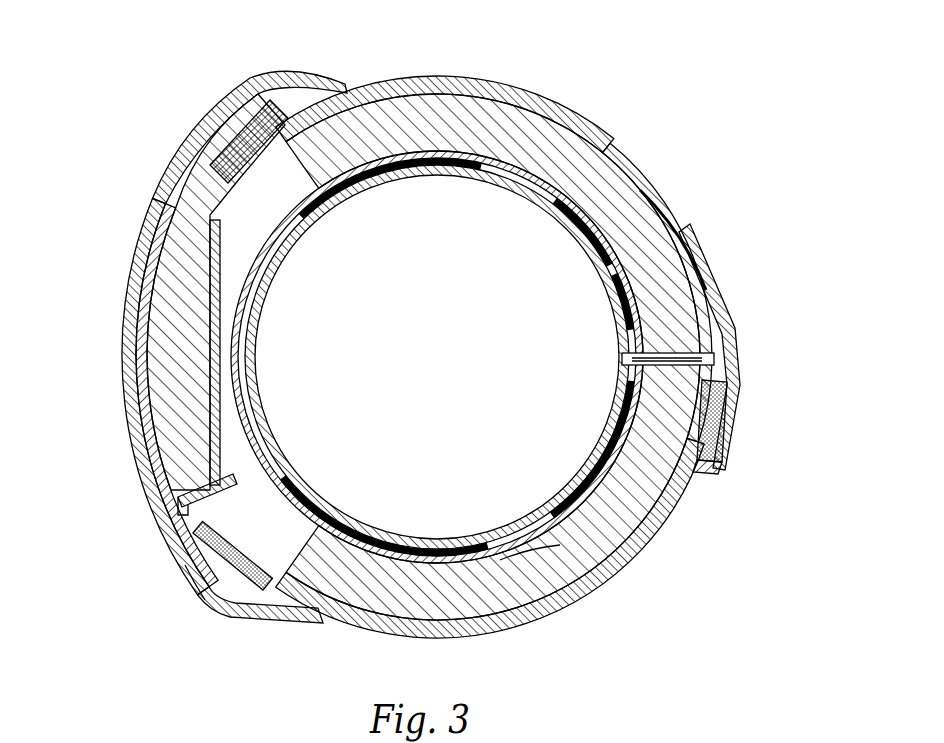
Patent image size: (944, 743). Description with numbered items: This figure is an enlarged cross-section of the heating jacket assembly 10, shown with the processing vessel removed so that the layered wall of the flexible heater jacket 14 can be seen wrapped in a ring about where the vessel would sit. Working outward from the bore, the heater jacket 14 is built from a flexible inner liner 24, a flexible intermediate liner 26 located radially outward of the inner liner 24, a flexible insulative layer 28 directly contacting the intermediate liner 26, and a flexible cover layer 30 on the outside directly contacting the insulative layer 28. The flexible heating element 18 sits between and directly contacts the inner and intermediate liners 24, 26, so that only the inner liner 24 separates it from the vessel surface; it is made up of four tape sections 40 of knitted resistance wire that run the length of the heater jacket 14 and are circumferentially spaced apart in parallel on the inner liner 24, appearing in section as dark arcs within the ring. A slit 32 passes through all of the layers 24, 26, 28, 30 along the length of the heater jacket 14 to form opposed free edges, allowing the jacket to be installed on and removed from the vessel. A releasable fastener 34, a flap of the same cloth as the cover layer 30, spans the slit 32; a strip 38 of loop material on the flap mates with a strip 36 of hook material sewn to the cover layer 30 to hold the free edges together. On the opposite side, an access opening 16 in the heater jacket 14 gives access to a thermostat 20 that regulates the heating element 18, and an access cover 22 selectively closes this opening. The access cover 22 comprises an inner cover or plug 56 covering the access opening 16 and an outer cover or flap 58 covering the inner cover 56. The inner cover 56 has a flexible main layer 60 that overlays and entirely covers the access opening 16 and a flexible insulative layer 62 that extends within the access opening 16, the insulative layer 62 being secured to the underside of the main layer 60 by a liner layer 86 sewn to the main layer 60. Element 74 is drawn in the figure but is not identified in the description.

The heating jacket assembly 10 is at (121, 62).
The heater jacket 14 is at (446, 74).
The access opening 16 is at (190, 500).
The heating element 18 is at (608, 243).
The thermostat 20 is at (133, 279).
The access cover 22 is at (119, 314).
The inner liner 24 is at (557, 517).
The intermediate liner 26 is at (500, 540).
The insulative layer 28 is at (530, 562).
The cover layer 30 is at (620, 570).
The slit 32 is at (625, 357).
The fastener 34 is at (736, 311).
The strip of hook material 36 is at (702, 472).
The strip of loop material 38 is at (727, 417).
The tape sections 40 is at (363, 187).
The inner cover 56 is at (200, 586).
The outer cover 58 is at (222, 612).
The main layer 60 is at (215, 550).
The insulative layer 62 is at (137, 364).
The bracket 74 is at (233, 456).
The liner layer 86 is at (210, 394).